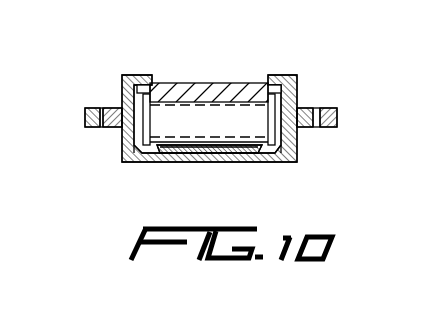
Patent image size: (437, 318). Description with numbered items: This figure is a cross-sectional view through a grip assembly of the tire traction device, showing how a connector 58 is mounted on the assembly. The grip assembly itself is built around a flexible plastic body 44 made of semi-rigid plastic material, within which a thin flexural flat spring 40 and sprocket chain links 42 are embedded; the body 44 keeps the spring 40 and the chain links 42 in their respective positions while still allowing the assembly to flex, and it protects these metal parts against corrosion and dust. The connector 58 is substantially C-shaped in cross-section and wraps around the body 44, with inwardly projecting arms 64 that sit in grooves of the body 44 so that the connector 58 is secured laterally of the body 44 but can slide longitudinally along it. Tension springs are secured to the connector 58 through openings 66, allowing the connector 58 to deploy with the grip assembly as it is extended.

The flexural flat spring 40 is at (247, 144).
The sprocket chain links 42 is at (203, 122).
The flexible plastic body 44 is at (218, 86).
The connector 58 is at (297, 83).
The inwardly projecting arms 64 is at (153, 79).
The openings 66 is at (97, 128).